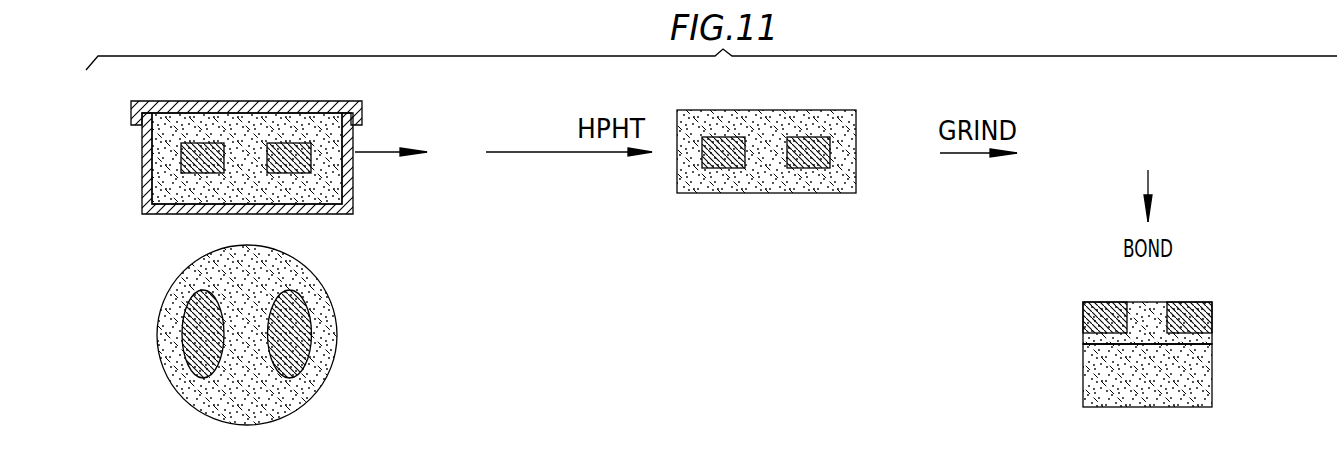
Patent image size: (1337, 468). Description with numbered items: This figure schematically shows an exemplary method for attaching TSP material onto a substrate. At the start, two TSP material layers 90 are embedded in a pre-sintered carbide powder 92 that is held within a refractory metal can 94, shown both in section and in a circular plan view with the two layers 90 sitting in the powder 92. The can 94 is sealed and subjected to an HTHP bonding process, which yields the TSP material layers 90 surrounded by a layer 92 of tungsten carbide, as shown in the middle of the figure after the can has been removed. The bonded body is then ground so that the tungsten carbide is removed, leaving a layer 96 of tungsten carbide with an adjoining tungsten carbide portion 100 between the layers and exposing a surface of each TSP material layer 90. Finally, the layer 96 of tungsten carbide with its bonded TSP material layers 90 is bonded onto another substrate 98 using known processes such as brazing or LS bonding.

The TSP material layers 90 is at (293, 157).
The pre-sintered carbide powder 92 is at (253, 150).
The refractory metal can 94 is at (152, 158).
The layer of tungsten carbide 96 is at (1093, 337).
The substrate 98 is at (1197, 382).
The tungsten carbide portion 100 is at (1157, 313).